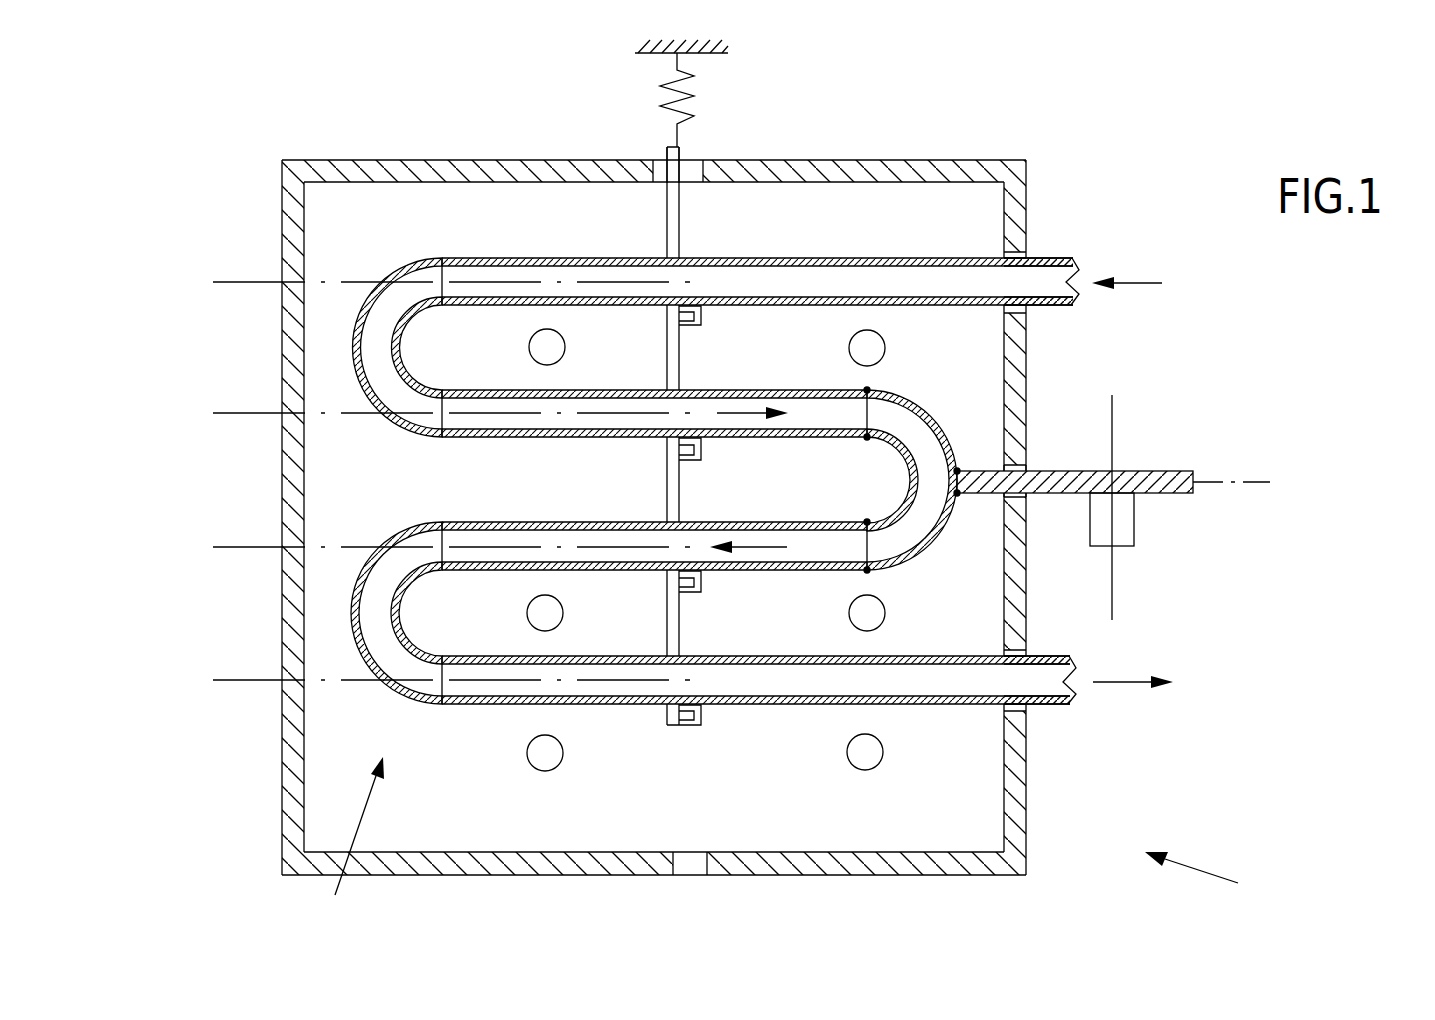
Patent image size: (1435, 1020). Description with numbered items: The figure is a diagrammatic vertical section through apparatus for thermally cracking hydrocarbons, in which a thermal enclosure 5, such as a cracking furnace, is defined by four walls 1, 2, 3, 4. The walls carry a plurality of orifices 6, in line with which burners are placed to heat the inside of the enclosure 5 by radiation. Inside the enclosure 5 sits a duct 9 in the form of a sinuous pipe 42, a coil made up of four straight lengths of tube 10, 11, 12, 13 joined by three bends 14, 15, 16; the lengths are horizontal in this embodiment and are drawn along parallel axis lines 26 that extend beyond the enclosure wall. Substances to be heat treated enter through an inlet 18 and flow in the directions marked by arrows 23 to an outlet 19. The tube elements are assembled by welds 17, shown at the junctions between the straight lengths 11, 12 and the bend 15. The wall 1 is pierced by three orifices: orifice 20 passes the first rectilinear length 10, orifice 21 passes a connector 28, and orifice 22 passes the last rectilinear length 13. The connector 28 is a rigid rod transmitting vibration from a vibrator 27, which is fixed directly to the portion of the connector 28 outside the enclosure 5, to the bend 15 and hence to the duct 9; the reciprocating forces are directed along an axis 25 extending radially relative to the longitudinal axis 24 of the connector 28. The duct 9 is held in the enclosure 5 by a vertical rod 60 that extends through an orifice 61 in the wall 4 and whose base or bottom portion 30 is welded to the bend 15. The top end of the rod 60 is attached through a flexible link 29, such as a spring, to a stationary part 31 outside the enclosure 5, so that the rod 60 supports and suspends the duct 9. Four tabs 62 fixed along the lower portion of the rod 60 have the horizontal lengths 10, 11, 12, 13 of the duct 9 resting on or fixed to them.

The wall 1 is at (1022, 817).
The wall 2 is at (960, 867).
The wall 3 is at (288, 812).
The wall 4 is at (587, 163).
The enclosure 5 is at (1200, 878).
The orifices 6 is at (850, 612).
The duct 9 is at (351, 839).
The first rectilinear length of tube 10 is at (571, 255).
The rectilinear length of tube 11 is at (538, 437).
The rectilinear length of tube 12 is at (578, 521).
The last rectilinear length of tube 13 is at (703, 658).
The bend 14 is at (352, 332).
The bend 15 is at (928, 552).
The bend 16 is at (350, 597).
The welds 17 is at (868, 438).
The inlet 18 is at (1030, 282).
The outlet 19 is at (1033, 680).
The orifice 20 is at (1023, 313).
The orifice 21 is at (1007, 460).
The orifice 22 is at (1007, 708).
The arrows 23 is at (1135, 273).
The longitudinal axis 24 is at (1258, 478).
The axis 25 is at (1112, 608).
The tube axes 26 is at (222, 281).
The vibrator 27 is at (1122, 520).
The connector 28 is at (1147, 473).
The flexible link 29 is at (665, 100).
The base portion 30 is at (957, 495).
The stationary part 31 is at (718, 50).
The sinuous pipe 42 is at (465, 272).
The rod 60 is at (680, 223).
The orifice 61 is at (688, 172).
The tabs 62 is at (697, 318).